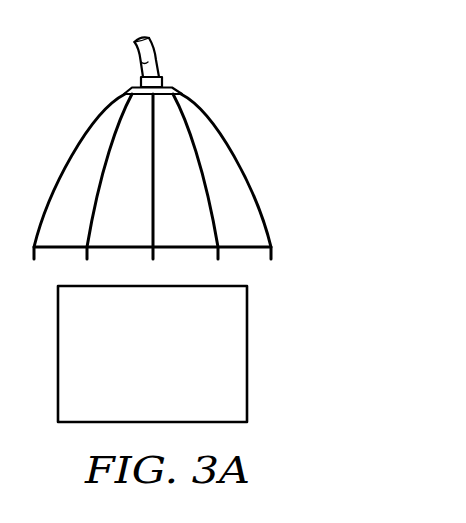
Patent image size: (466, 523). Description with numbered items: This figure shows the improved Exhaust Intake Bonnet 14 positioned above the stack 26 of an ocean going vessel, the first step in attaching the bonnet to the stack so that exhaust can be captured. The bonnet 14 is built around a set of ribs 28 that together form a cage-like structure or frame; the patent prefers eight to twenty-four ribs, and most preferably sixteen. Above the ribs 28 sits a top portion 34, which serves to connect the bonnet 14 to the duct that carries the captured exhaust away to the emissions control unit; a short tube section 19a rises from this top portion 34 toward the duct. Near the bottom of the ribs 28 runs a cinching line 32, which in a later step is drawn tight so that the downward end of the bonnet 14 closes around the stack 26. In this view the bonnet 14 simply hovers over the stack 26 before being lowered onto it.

The Exhaust Intake Bonnet 14 is at (301, 86).
The tube 19a is at (145, 62).
The top portion 34 is at (151, 84).
The ribs 28 is at (58, 172).
The cinching line 32 is at (232, 247).
The stack 26 is at (220, 373).